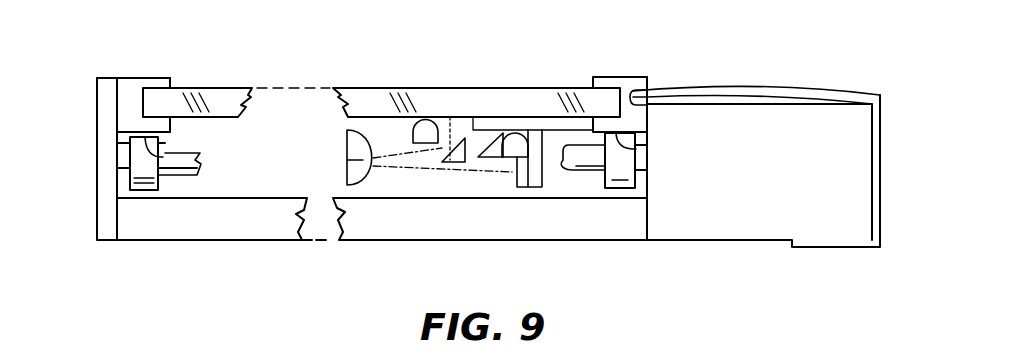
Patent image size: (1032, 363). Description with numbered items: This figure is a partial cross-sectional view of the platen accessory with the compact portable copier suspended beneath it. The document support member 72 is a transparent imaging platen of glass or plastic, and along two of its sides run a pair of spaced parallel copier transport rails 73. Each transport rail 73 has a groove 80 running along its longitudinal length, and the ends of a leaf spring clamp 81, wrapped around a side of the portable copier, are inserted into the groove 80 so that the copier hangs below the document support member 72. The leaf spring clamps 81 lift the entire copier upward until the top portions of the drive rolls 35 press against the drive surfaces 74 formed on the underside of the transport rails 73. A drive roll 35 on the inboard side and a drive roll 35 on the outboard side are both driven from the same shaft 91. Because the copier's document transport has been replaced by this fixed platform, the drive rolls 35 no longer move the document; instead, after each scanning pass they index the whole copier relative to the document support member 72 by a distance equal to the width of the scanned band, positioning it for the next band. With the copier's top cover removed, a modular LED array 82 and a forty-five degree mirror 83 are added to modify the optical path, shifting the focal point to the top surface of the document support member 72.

The copier transport rail 73 is at (140, 78).
The document support member 72 is at (418, 88).
The drive surface 74 is at (163, 157).
The shaft 91 is at (200, 165).
The drive roll 35 is at (143, 190).
The modular LED array 82 is at (427, 136).
The 45° mirror 83 is at (448, 167).
The groove 80 is at (649, 92).
The leaf spring clamp 81 is at (790, 87).